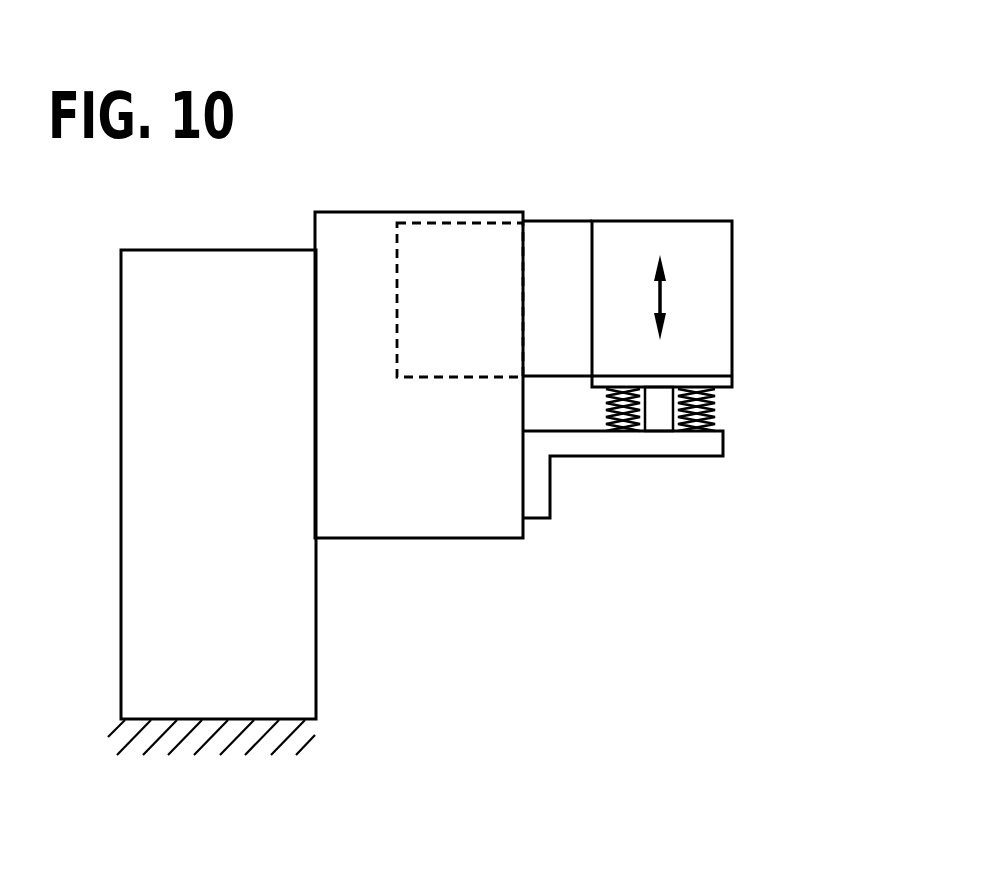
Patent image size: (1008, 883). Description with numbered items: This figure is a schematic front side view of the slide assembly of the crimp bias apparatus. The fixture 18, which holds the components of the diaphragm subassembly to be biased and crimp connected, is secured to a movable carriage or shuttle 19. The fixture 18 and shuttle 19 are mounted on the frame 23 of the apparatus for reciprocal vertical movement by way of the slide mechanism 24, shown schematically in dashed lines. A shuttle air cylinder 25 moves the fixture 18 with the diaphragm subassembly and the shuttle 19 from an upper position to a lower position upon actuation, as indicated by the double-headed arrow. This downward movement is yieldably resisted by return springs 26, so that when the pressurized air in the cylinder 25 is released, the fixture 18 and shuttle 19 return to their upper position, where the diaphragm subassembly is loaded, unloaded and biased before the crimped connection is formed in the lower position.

The fixture 18 is at (717, 245).
The shuttle 19 is at (552, 242).
The frame 23 is at (225, 250).
The slide mechanism 24 is at (407, 210).
The shuttle air cylinder 25 is at (667, 432).
The return springs 26 is at (710, 402).